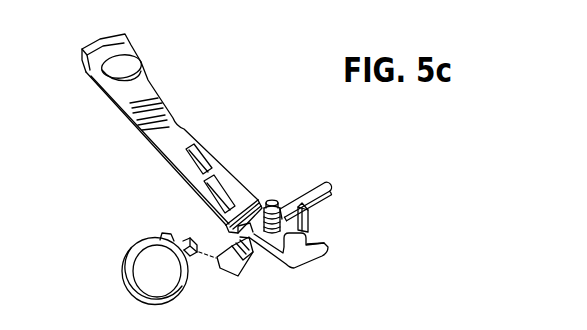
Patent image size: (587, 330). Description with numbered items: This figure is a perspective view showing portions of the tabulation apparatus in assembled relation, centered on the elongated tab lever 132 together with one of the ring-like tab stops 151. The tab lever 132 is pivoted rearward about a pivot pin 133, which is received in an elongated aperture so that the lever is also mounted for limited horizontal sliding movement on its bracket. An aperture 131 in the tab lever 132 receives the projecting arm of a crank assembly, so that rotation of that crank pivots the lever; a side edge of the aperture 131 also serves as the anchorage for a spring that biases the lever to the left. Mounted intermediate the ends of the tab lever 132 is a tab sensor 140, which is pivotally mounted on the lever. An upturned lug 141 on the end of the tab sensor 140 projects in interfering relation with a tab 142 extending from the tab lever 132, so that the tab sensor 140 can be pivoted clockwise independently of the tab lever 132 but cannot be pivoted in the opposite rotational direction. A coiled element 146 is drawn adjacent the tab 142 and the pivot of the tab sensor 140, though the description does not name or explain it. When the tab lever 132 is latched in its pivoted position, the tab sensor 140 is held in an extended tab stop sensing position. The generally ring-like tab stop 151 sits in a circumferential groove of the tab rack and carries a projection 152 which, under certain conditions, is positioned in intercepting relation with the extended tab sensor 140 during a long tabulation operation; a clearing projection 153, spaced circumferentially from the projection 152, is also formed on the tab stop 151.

The aperture 131 is at (198, 153).
The tab lever 132 is at (134, 107).
The pivot pin 133 is at (126, 66).
The tab sensor 140 is at (250, 250).
The upturned lug 141 is at (217, 260).
The tab 142 is at (307, 183).
The spring 146 is at (222, 193).
The tab stop 151 is at (127, 282).
The projection 152 is at (193, 243).
The clearing projection 153 is at (167, 234).